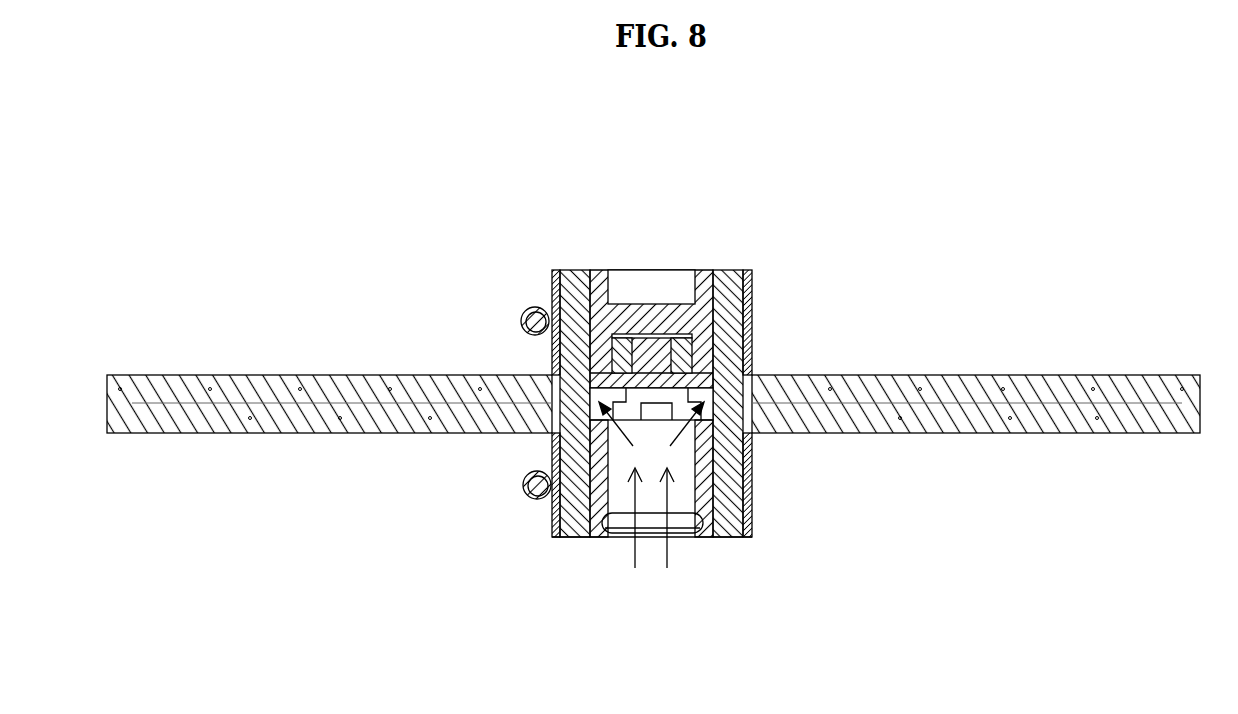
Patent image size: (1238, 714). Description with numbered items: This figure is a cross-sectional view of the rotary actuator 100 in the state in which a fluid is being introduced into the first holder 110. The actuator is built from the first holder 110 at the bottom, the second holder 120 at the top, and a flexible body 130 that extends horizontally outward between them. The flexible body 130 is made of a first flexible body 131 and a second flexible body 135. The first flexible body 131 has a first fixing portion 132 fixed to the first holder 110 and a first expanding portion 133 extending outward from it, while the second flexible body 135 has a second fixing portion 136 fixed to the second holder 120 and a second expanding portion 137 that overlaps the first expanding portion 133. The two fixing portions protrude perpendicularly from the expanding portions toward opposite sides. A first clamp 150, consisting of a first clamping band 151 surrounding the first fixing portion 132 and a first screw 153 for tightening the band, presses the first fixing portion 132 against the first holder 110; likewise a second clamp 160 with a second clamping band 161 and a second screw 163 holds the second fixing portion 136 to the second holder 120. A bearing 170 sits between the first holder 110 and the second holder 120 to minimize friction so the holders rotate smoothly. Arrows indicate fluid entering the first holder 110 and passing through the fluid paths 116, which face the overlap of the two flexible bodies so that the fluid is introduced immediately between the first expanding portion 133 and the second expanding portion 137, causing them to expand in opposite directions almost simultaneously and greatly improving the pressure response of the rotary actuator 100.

The rotary actuator 100 is at (258, 168).
The first holder 110 is at (610, 486).
The fluid paths 116 is at (556, 444).
The second holder 120 is at (614, 293).
The flexible body 130 is at (1058, 262).
The first flexible body 131 is at (1037, 424).
The first fixing portion 132 is at (735, 490).
The first expanding portion 133 is at (897, 434).
The second flexible body 135 is at (1007, 374).
The second fixing portion 136 is at (738, 297).
The second expanding portion 137 is at (870, 384).
The first clamp 150 is at (434, 485).
The first clamping band 151 is at (552, 518).
The first screw 153 is at (522, 488).
The second clamp 160 is at (430, 250).
The second clamping band 161 is at (552, 290).
The second screw 163 is at (522, 318).
The bearing 170 is at (682, 357).